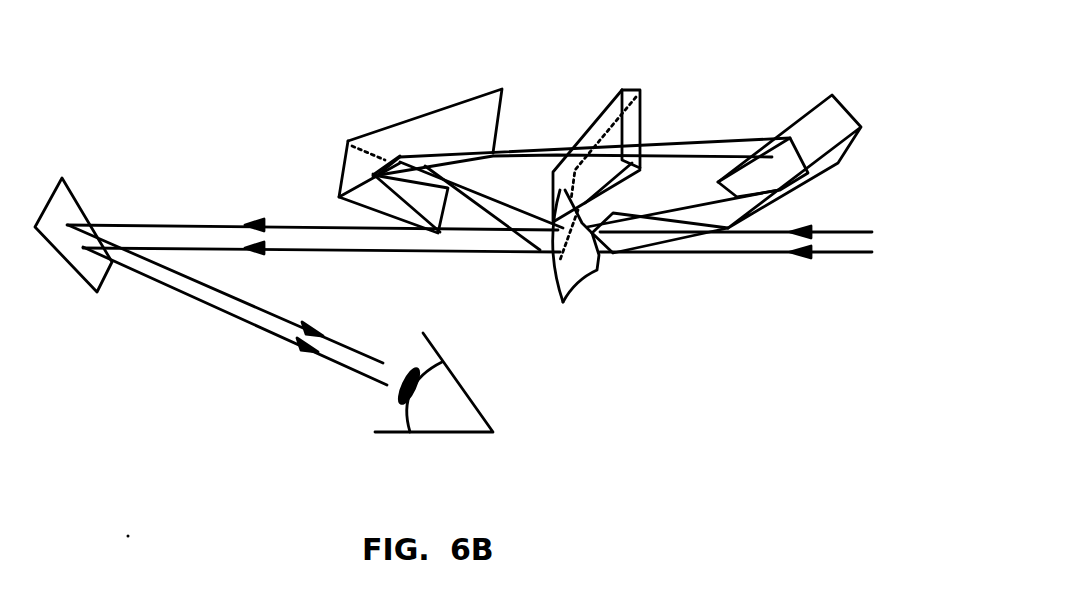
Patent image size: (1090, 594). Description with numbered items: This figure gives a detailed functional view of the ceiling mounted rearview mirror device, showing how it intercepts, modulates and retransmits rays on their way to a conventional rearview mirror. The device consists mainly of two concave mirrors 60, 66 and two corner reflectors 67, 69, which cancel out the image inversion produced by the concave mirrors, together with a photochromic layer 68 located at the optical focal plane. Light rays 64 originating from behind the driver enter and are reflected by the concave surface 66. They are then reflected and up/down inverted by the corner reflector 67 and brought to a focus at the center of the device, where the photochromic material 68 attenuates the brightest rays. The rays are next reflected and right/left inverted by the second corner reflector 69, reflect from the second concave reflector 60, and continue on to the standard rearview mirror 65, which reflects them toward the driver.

The concave mirror 60 is at (553, 250).
The light rays 64 is at (782, 262).
The rearview mirror 65 is at (76, 192).
The concave mirror 66 is at (597, 270).
The corner reflector 67 is at (863, 122).
The photochromic layer 68 is at (623, 88).
The corner reflector 69 is at (385, 127).